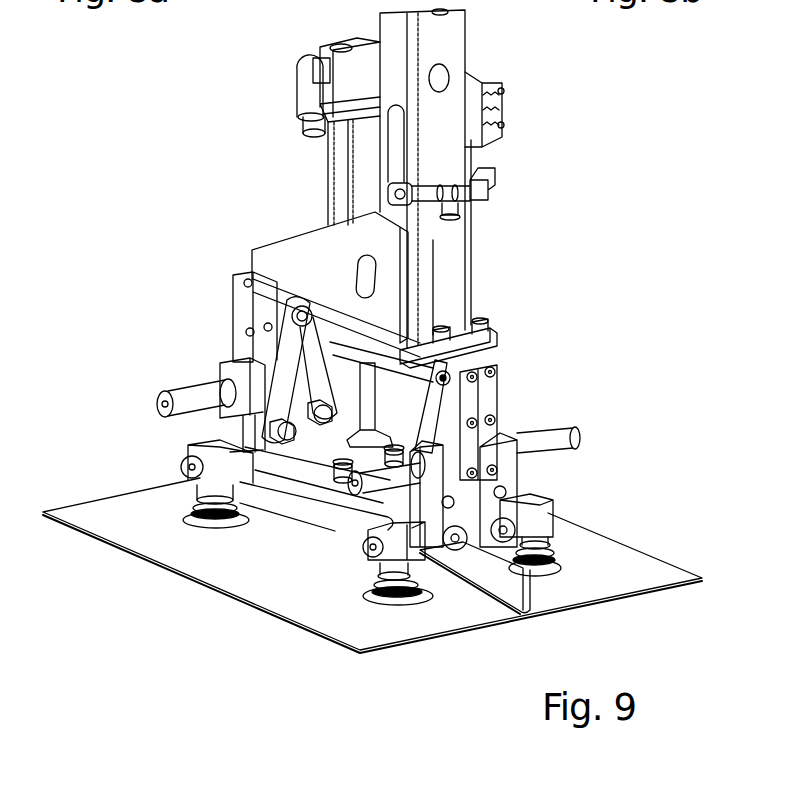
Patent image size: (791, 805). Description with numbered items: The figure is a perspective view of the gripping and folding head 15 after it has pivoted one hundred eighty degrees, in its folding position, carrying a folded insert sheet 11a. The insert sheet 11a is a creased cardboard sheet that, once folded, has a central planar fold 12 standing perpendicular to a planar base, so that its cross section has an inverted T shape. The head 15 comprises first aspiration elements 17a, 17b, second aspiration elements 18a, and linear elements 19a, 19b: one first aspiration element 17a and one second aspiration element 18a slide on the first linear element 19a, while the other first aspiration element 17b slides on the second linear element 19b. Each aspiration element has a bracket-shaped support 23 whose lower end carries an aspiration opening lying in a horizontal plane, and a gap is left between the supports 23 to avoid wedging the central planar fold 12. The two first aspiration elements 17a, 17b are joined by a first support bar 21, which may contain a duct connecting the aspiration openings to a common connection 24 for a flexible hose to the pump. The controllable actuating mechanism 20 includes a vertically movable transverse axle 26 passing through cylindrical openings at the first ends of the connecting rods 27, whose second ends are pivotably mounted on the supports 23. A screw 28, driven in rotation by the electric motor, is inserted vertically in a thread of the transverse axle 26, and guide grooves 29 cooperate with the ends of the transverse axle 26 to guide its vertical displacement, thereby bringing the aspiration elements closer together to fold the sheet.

The gripping and folding head 15 is at (207, 181).
The transverse axle 26 is at (300, 308).
The guide groove 29 is at (265, 322).
The connecting rod 27 is at (313, 373).
The second linear element 19b is at (182, 388).
The actuating mechanism 20 is at (508, 275).
The first linear element 19a is at (547, 430).
The screw 28 is at (372, 378).
The first aspiration element 17b is at (200, 505).
The insert sheet 11a is at (177, 573).
The common connection 24 is at (344, 436).
The first support bar 21 is at (347, 503).
The first aspiration element 17a is at (405, 606).
The support 23 is at (420, 547).
The planar fold 12 is at (500, 585).
The second aspiration element 18a is at (550, 572).